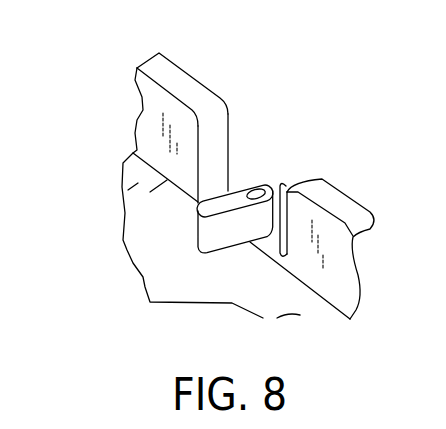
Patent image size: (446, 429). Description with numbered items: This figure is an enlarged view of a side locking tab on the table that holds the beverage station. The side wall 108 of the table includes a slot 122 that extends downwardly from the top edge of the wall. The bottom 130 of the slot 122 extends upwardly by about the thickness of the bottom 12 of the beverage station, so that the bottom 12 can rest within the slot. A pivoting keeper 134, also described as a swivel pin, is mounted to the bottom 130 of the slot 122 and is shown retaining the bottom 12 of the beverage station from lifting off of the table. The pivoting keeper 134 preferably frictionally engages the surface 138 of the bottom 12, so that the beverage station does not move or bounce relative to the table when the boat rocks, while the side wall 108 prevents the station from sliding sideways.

The side wall 108 is at (188, 73).
The slot 122 is at (228, 133).
The bottom of slot 130 is at (272, 248).
The pivoting keeper 134 is at (263, 190).
The surface of the bottom 138 is at (147, 226).
The bottom of the beverage station 12 is at (325, 297).